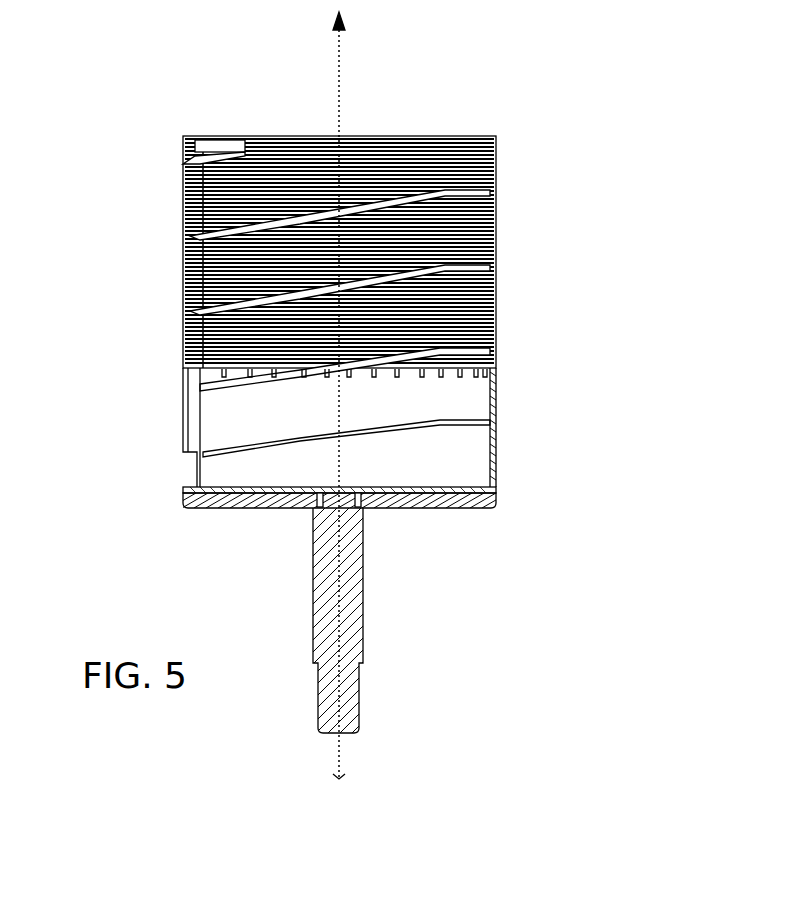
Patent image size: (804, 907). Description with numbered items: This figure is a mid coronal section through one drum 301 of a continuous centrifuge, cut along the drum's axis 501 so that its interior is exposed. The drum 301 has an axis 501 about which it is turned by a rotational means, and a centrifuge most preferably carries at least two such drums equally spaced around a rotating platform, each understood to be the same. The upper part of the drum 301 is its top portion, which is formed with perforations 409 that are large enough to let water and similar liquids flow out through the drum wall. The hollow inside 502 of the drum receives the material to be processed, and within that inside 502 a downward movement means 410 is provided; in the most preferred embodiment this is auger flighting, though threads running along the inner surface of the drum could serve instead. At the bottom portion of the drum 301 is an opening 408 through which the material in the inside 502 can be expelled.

The drum 301 is at (362, 428).
The perforations 409 is at (514, 232).
The downward movement means 410 is at (185, 369).
The inside 502 is at (489, 389).
The opening 408 is at (167, 463).
The axis 501 is at (317, 396).